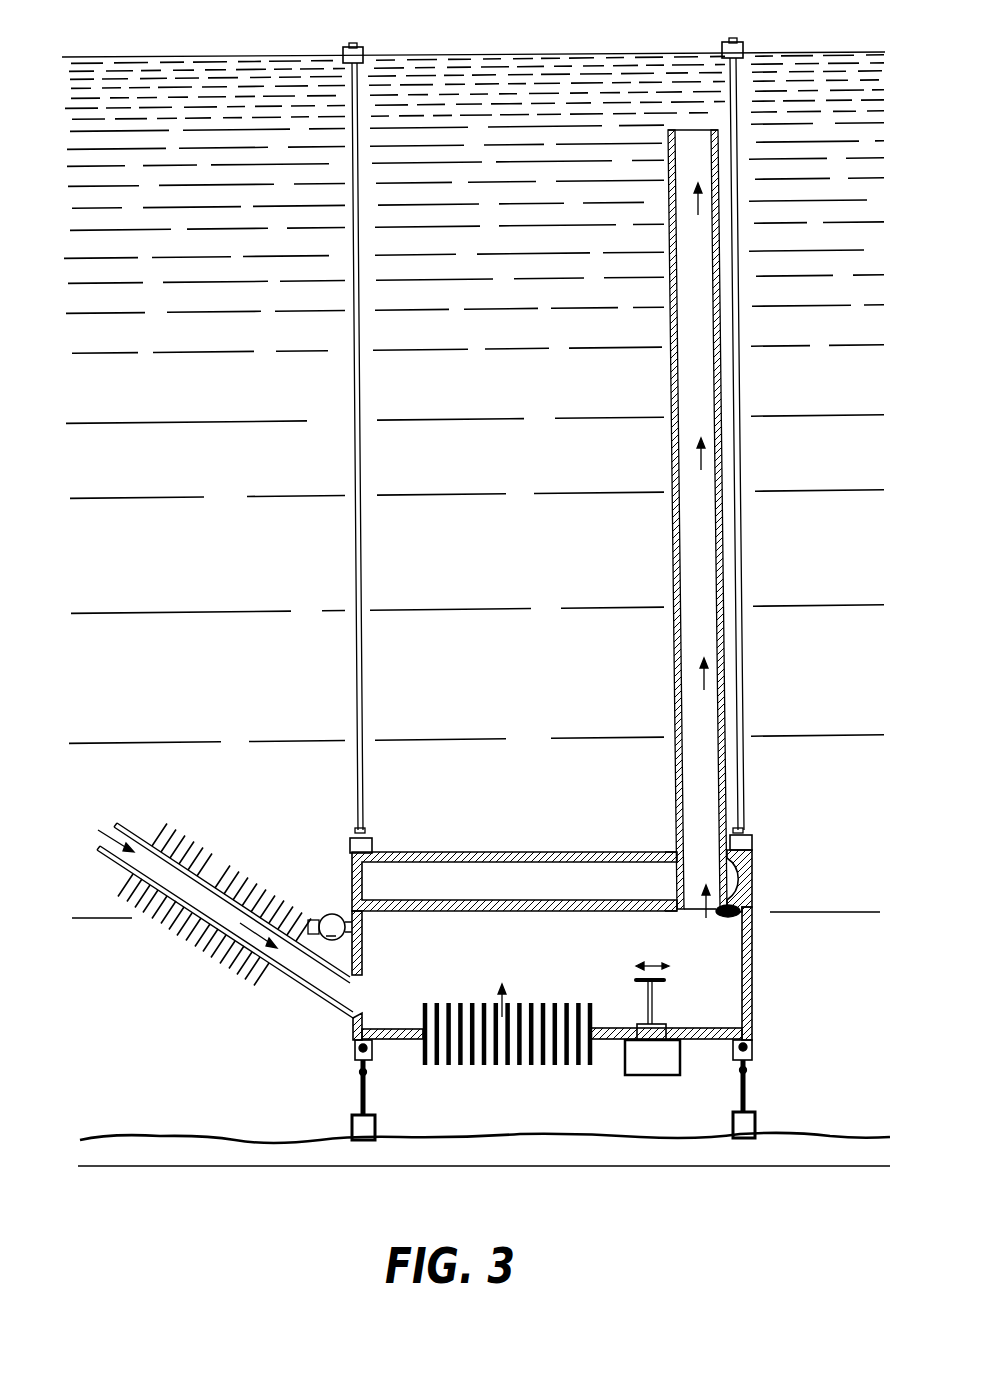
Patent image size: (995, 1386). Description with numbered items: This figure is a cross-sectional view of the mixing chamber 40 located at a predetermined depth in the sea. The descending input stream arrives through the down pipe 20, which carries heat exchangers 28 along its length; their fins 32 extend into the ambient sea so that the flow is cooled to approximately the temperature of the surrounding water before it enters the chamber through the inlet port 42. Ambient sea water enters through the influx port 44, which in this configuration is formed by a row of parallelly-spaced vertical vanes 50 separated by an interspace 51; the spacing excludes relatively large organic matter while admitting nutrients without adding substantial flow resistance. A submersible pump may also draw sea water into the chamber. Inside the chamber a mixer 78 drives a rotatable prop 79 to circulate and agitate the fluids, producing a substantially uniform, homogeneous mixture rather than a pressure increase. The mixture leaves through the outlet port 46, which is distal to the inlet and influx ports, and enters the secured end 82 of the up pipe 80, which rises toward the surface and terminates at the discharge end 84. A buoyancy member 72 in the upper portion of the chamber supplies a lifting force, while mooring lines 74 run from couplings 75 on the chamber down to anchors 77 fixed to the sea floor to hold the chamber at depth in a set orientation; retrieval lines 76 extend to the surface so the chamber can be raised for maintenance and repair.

The down pipe 20 is at (120, 826).
The heat exchangers 28 is at (215, 970).
The fins 32 is at (210, 866).
The mixing chamber 40 is at (752, 973).
The inlet port 42 is at (365, 1020).
The influx port 44 is at (577, 1047).
The outlet port 46 is at (748, 915).
The vanes 50 is at (450, 1062).
The interspace 51 is at (522, 1005).
The buoyancy member 72 is at (462, 878).
The mooring lines 74 is at (357, 1086).
The couplings 75 is at (355, 1050).
The retrieval lines 76 is at (355, 82).
The anchors 77 is at (352, 1138).
The mixer 78 is at (650, 1075).
The prop 79 is at (665, 981).
The up pipe 80 is at (668, 158).
The secured end 82 is at (675, 852).
The discharge end 84 is at (692, 140).